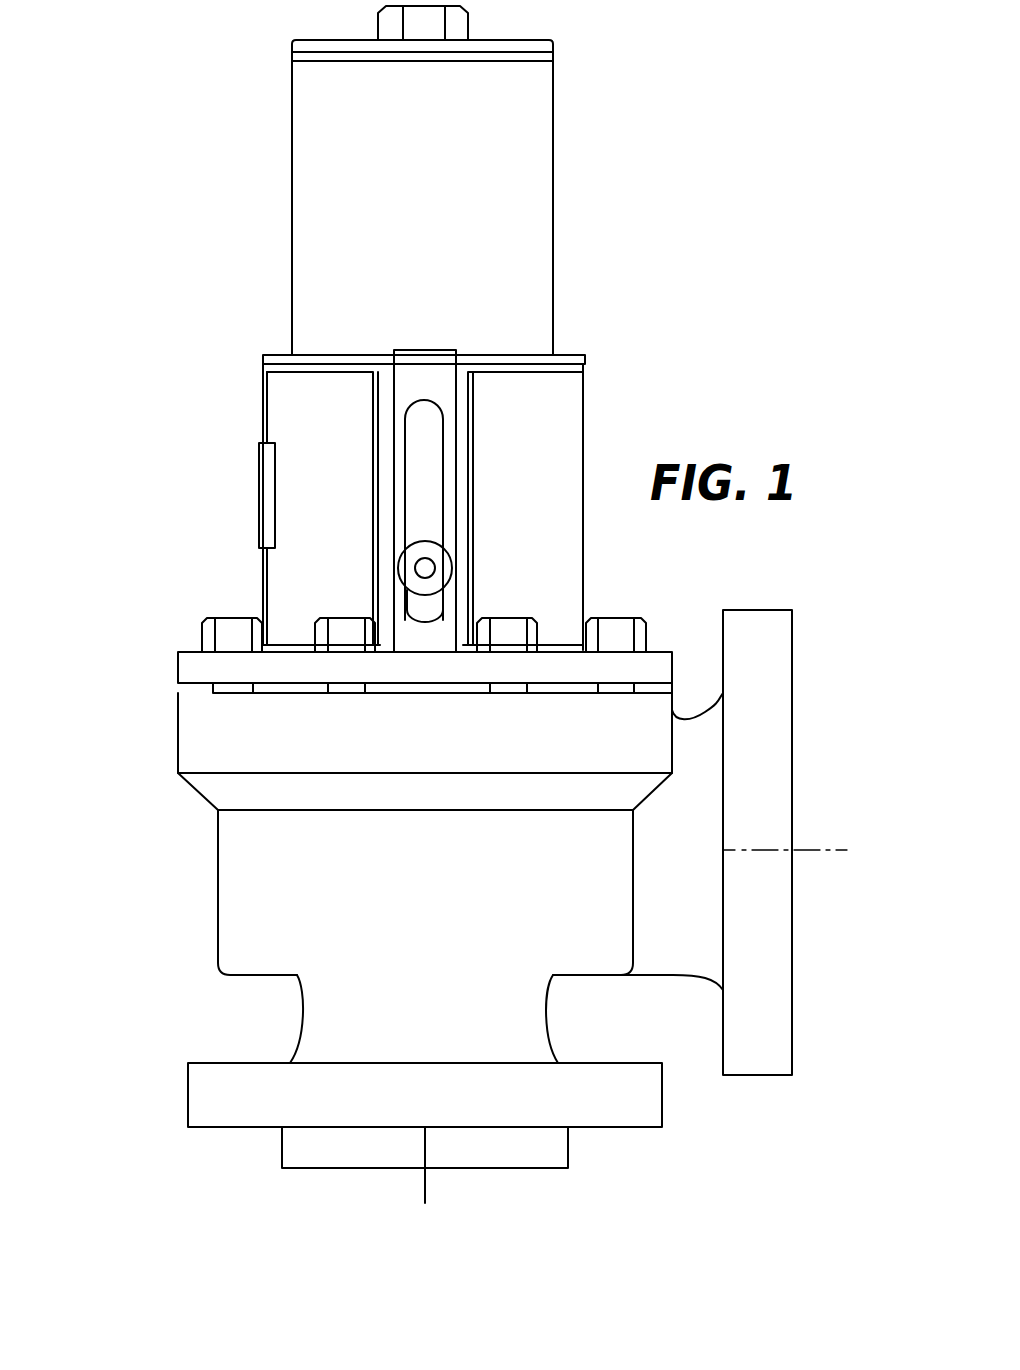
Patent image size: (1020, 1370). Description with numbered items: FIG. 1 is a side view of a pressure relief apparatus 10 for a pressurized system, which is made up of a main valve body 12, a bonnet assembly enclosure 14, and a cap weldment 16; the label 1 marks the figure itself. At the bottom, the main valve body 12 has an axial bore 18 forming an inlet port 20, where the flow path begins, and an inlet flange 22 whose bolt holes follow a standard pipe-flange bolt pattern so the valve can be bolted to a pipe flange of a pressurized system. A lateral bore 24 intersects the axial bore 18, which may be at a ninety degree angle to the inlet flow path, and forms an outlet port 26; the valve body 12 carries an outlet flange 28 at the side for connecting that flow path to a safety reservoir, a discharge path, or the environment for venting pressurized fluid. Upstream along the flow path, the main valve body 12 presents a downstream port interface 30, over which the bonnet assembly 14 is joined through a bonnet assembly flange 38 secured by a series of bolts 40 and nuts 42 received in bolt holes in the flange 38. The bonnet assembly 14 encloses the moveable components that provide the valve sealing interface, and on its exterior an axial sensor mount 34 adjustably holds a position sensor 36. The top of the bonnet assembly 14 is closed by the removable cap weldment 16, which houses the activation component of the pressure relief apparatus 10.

The actuator housing 1 is at (262, 393).
The pressure relief apparatus 10 is at (798, 277).
The main valve body 12 is at (235, 928).
The bonnet assembly enclosure 14 is at (267, 457).
The cap weldment 16 is at (513, 195).
The axial bore 18 is at (338, 1167).
The inlet port 20 is at (513, 1168).
The inlet flange 22 is at (217, 1082).
The lateral bore 24 is at (792, 877).
The outlet port 26 is at (789, 1040).
The outlet flange 28 is at (763, 605).
The downstream port interface 30 is at (207, 685).
The axial sensor mount 34 is at (448, 465).
The position sensor 36 is at (440, 562).
The bonnet assembly flange 38 is at (198, 660).
The bolts 40 is at (507, 680).
The nuts 42 is at (507, 622).